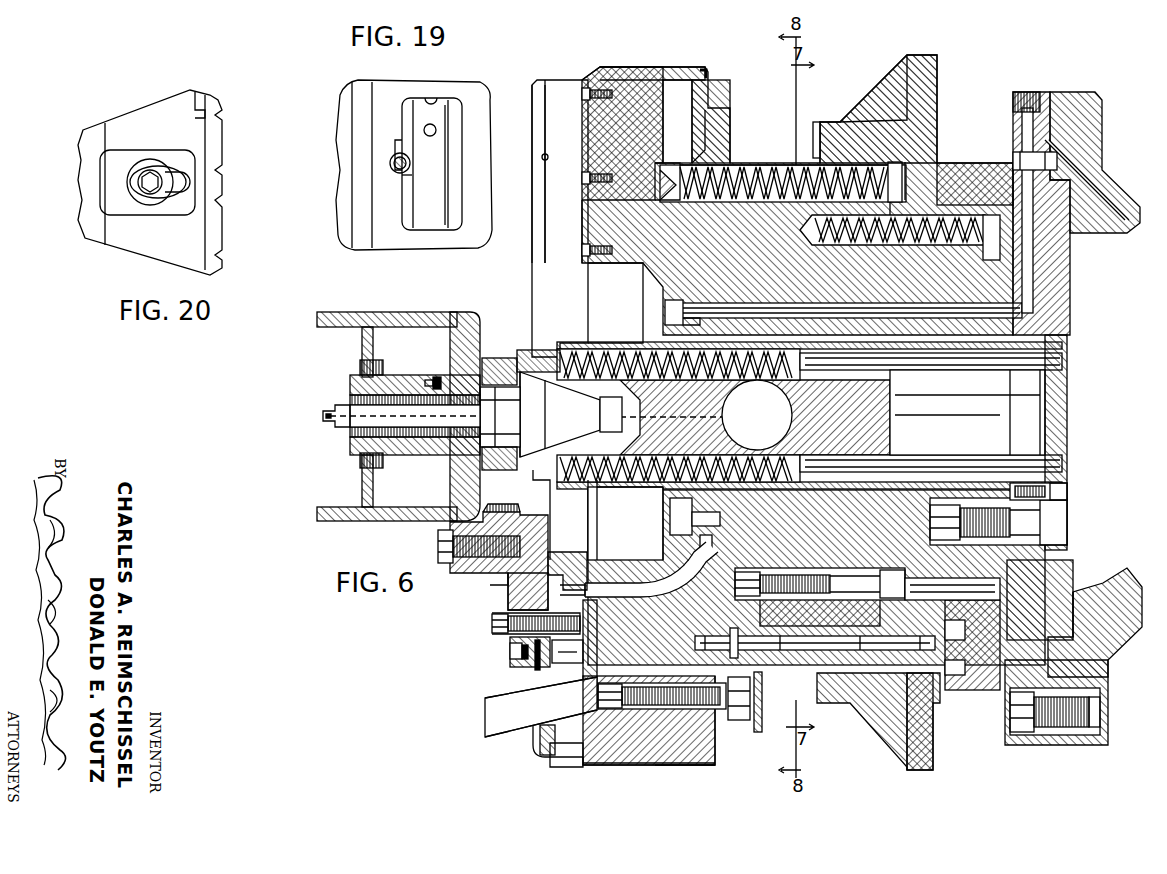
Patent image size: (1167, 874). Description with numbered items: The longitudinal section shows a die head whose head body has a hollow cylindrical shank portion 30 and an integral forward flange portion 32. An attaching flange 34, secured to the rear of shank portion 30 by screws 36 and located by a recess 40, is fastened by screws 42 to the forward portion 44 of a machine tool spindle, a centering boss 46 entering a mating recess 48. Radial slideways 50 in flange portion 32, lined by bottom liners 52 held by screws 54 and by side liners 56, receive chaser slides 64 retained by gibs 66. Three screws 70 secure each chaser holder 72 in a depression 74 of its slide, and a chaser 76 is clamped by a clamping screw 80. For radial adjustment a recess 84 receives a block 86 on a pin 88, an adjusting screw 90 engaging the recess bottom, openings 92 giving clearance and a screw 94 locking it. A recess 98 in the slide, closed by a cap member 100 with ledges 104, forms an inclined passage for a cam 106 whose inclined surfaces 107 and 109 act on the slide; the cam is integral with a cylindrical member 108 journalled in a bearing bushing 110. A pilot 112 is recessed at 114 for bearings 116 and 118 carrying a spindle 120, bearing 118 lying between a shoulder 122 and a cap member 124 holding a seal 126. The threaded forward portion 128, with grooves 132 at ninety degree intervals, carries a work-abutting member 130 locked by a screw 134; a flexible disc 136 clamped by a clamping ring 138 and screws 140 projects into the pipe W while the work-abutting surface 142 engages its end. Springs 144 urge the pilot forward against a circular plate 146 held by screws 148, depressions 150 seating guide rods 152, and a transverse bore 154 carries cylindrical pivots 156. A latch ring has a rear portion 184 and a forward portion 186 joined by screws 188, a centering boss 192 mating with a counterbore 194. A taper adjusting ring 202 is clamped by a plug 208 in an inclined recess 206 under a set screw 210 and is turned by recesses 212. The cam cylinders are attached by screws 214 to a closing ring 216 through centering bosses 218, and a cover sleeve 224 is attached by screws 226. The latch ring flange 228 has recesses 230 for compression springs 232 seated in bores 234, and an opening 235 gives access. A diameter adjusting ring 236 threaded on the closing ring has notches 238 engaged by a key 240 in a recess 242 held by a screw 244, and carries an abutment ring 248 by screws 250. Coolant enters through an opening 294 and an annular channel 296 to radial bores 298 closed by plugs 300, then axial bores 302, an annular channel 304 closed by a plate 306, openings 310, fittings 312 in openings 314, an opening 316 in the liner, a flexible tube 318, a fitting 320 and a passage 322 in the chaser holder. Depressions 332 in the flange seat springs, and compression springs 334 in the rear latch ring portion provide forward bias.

In FIG. 6, the shank portion 30 is at (1005, 284).
In FIG. 6, the forward flange portion 32 is at (628, 80).
In FIG. 6, the attaching flange 34 is at (1068, 560).
In FIG. 6, the screws 36 is at (1068, 517).
In FIG. 6, the recess 40 is at (1012, 400).
In FIG. 6, the screws 42 is at (1058, 735).
In FIG. 6, the forward portion of machine tool spindle 44 is at (1096, 90).
In FIG. 6, the centering boss 46 is at (1070, 275).
In FIG. 6, the mating recess 48 is at (1078, 598).
In FIG. 6, the slideways 50 is at (582, 214).
In FIG. 6, the liner 52 is at (582, 125).
In FIG. 6, the screws 54 is at (584, 92).
In FIG. 6, the side liners 56 is at (547, 160).
In FIG. 6, the chaser slide 64 is at (595, 555).
In FIG. 6, the gibs 66 is at (535, 752).
In FIG. 6, the screws 70 is at (500, 630).
In FIG. 6, the chaser holder 72 is at (507, 595).
In FIG. 6, the longitudinal rectangular depression 74 is at (549, 522).
In FIG. 6, the chaser 76 is at (500, 510).
In FIG. 6, the clamping screw 80 is at (437, 555).
In FIG. 6, the rectangular recess 84 is at (510, 642).
In FIG. 6, the rectangular block 86 is at (524, 663).
In FIG. 6, the pin 88 is at (565, 668).
In FIG. 6, the adjusting screw 90 is at (536, 672).
In FIG. 6, the openings 92 is at (500, 620).
In FIG. 6, the screw 94 is at (509, 652).
In FIG. 6, the rectangular recess 98 is at (583, 692).
In FIG. 6, the cap member 100 is at (575, 755).
In FIG. 6, the ledges 104 is at (545, 735).
In FIG. 6, the cam 106 is at (490, 712).
In FIG. 6, the inclined surface 107 is at (520, 700).
In FIG. 6, the cylindrical member 108 is at (680, 768).
In FIG. 6, the inclined surface 109 is at (490, 740).
In FIG. 6, the bearing bushing 110 is at (650, 765).
In FIG. 6, the pilot 112 is at (672, 340).
In FIG. 6, the recess 114 is at (557, 380).
In FIG. 6, the anti-friction bearing 116 is at (620, 487).
In FIG. 6, the anti-friction bearing 118 is at (520, 366).
In FIG. 6, the spindle 120 is at (571, 414).
In FIG. 6, the shoulder 122 is at (522, 406).
In FIG. 6, the cap member 124 is at (528, 350).
In FIG. 6, the seal 126 is at (518, 462).
In FIG. 6, the forwardly projecting portion 128 is at (470, 456).
In FIG. 6, the work-abutting member 130 is at (480, 460).
In FIG. 6, the longitudinal grooves 132 is at (405, 400).
In FIG. 6, the radial screw 134 is at (428, 382).
In FIG. 6, the disc 136 is at (366, 328).
In FIG. 6, the clamping ring 138 is at (358, 362).
In FIG. 6, the screws 140 is at (358, 368).
In FIG. 6, the work-abutting surface 142 is at (472, 338).
In FIG. 6, the springs 144 is at (540, 362).
In FIG. 6, the circular plate 146 is at (1068, 385).
In FIG. 6, the screws 148 is at (1068, 492).
In FIG. 6, the circular depressions 150 is at (1070, 357).
In FIG. 6, the guide rods 152 is at (970, 462).
In FIG. 6, the transverse bore 154 is at (788, 428).
In FIG. 6, the cylindrical pivots 156 is at (738, 409).
In FIG. 19, the rear portion of latch ring 184 is at (458, 150).
In FIG. 6, the rear portion of latch ring 184 is at (948, 205).
In FIG. 19, the forward portion of latch ring 186 is at (408, 235).
In FIG. 6, the forward portion of latch ring 186 is at (728, 634).
In FIG. 6, the screws 188 is at (905, 590).
In FIG. 6, the annular centering boss 192 is at (805, 570).
In FIG. 6, the annular counterbore 194 is at (785, 575).
In FIG. 19, the taper adjusting ring 202 is at (440, 219).
In FIG. 6, the taper adjusting ring 202 is at (748, 200).
In FIG. 19, the cylindrical recess 206 is at (400, 137).
In FIG. 19, the plug 208 is at (430, 176).
In FIG. 19, the set screw 210 is at (390, 163).
In FIG. 19, the recesses 212 is at (437, 130).
In FIG. 6, the screws 214 is at (750, 700).
In FIG. 20, the closing ring 216 is at (125, 245).
In FIG. 19, the closing ring 216 is at (388, 86).
In FIG. 6, the closing ring 216 is at (712, 100).
In FIG. 6, the centering boss 218 is at (718, 708).
In FIG. 6, the cover sleeve 224 is at (650, 68).
In FIG. 6, the screws 226 is at (707, 70).
In FIG. 6, the flange 228 is at (692, 145).
In FIG. 6, the circular recesses 230 is at (666, 160).
In FIG. 6, the compression springs 232 is at (700, 165).
In FIG. 6, the axial bores 234 is at (733, 168).
In FIG. 19, the opening 235 is at (432, 97).
In FIG. 20, the diameter adjusting ring 236 is at (214, 125).
In FIG. 6, the diameter adjusting ring 236 is at (930, 142).
In FIG. 20, the radial notches 238 is at (185, 108).
In FIG. 6, the radial notches 238 is at (815, 124).
In FIG. 20, the key 240 is at (166, 153).
In FIG. 20, the recess 242 is at (100, 205).
In FIG. 20, the screw 244 is at (152, 198).
In FIG. 6, the abutment ring 248 is at (945, 667).
In FIG. 6, the screws 250 is at (950, 648).
In FIG. 6, the opening 294 is at (1128, 228).
In FIG. 6, the annular channel 296 is at (1060, 160).
In FIG. 6, the radial bores 298 is at (1028, 130).
In FIG. 6, the plugs 300 is at (1024, 92).
In FIG. 6, the axially directed bores 302 is at (680, 308).
In FIG. 6, the annular channel 304 is at (670, 516).
In FIG. 6, the plate 306 is at (668, 320).
In FIG. 6, the openings 310 is at (680, 536).
In FIG. 6, the fittings 312 is at (700, 548).
In FIG. 6, the opening 314 is at (665, 590).
In FIG. 6, the opening 316 is at (592, 602).
In FIG. 6, the flexible tube 318 is at (640, 602).
In FIG. 6, the fitting 320 is at (568, 552).
In FIG. 6, the passage 322 is at (506, 583).
In FIG. 6, the depressions 332 is at (664, 180).
In FIG. 6, the compression springs 334 is at (993, 220).
In FIG. 6, the pipe W is at (417, 316).